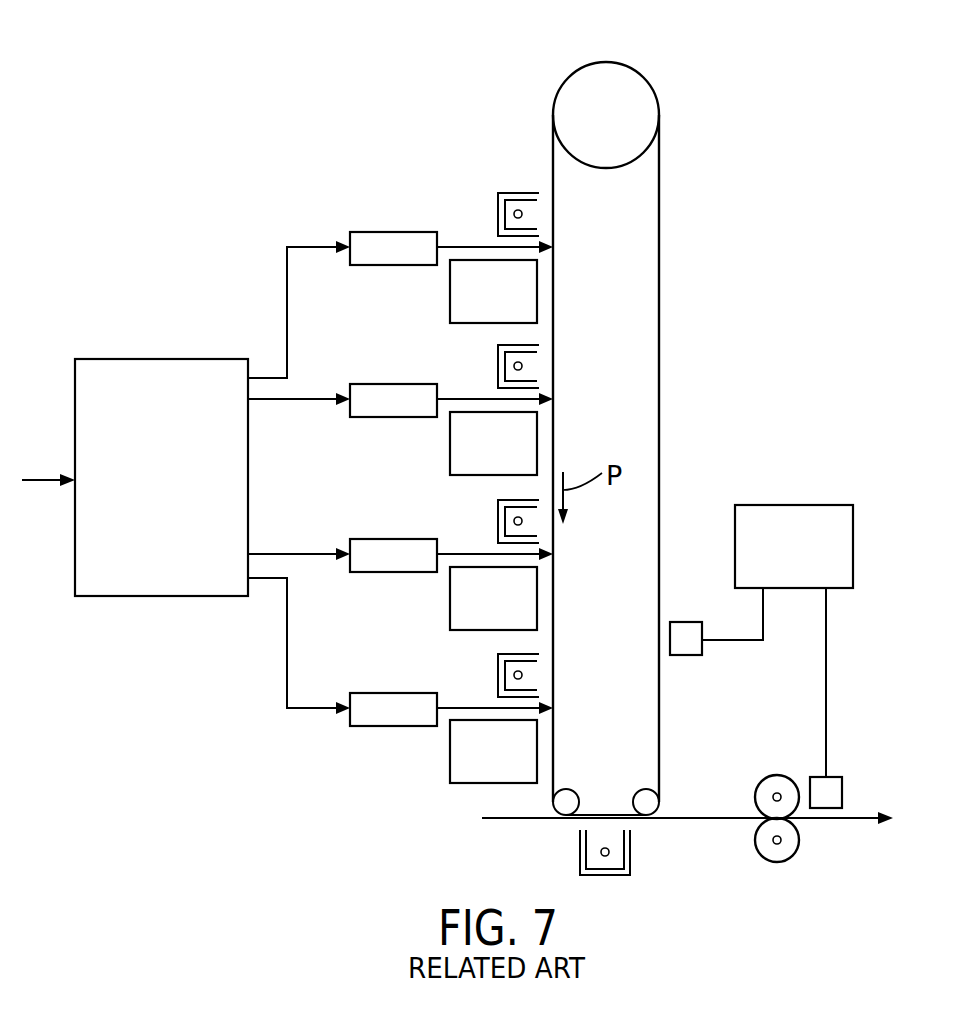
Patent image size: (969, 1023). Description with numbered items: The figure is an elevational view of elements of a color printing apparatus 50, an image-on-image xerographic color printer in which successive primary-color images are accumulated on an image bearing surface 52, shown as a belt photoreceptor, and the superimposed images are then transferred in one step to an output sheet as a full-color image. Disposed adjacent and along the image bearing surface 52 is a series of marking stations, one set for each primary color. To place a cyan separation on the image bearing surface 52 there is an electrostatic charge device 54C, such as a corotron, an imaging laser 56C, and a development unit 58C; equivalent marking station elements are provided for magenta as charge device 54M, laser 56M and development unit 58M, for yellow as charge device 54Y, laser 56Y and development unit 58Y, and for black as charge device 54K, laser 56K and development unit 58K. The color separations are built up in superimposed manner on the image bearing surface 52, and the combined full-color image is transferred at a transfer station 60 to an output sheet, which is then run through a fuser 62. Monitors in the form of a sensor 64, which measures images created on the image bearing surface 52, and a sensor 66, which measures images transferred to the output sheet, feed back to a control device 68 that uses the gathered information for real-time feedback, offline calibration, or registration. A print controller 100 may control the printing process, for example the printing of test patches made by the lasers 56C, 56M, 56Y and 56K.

The color printing apparatus 50 is at (168, 82).
The print controller 100 is at (163, 359).
The image bearing surface 52 is at (660, 362).
The electrostatic charge device 54C is at (498, 216).
The electrostatic charge device 54M is at (498, 368).
The electrostatic charge device 54Y is at (498, 523).
The electrostatic charge device 54K is at (498, 677).
The imaging laser 56C is at (357, 232).
The imaging laser 56M is at (357, 384).
The imaging laser 56Y is at (357, 539).
The imaging laser 56K is at (357, 693).
The development unit 58C is at (450, 287).
The development unit 58M is at (450, 440).
The development unit 58Y is at (450, 594).
The development unit 58K is at (450, 747).
The transfer station 60 is at (655, 835).
The fuser 62 is at (763, 765).
The sensor 64 is at (687, 622).
The sensor 66 is at (835, 777).
The control device 68 is at (798, 504).